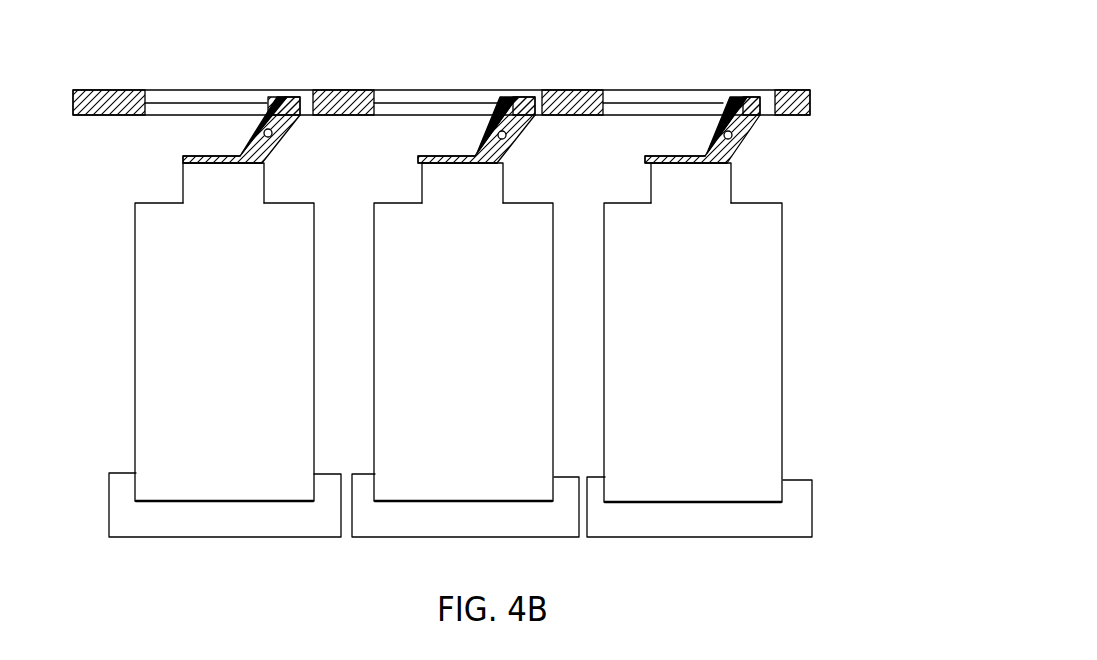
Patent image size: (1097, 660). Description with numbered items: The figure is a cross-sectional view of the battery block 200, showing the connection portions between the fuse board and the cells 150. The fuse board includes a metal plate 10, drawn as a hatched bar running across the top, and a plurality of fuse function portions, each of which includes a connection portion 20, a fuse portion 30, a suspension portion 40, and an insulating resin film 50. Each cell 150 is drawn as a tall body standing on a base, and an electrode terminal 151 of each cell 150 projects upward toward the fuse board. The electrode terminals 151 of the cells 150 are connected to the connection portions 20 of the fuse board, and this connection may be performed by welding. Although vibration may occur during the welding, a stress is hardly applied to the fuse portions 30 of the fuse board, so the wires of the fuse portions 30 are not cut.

The metal plate 10 is at (128, 90).
The connection portion 20 is at (183, 156).
The fuse portion 30 is at (272, 134).
The suspension portion 40 is at (277, 97).
The insulating resin film 50 is at (256, 143).
The cell 150 is at (160, 323).
The electrode terminal 151 is at (198, 183).
The battery block 200 is at (832, 81).